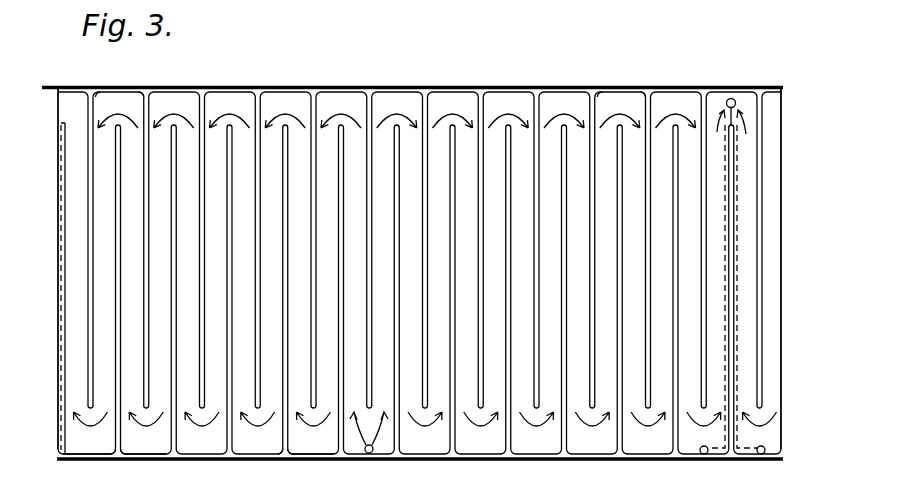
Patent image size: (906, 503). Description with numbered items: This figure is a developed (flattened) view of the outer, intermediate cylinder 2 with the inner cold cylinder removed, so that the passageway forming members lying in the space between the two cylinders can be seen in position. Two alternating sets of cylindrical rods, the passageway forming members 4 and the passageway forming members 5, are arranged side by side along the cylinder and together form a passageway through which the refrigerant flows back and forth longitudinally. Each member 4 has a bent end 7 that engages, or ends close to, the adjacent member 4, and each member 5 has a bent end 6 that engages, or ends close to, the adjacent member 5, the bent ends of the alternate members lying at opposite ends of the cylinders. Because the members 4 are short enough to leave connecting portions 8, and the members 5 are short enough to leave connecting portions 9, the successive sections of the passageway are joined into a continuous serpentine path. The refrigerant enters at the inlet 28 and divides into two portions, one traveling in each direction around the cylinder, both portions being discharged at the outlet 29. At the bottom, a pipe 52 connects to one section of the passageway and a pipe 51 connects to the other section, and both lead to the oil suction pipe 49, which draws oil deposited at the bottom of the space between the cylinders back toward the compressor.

The intermediate cylinder 2 is at (67, 109).
The passageway forming member 4 is at (147, 155).
The passageway forming member 5 is at (120, 193).
The bent end 6 is at (198, 458).
The bent end 7 is at (108, 84).
The connecting portion 8 is at (137, 448).
The connecting portion 9 is at (170, 93).
The inlet 28 is at (367, 453).
The outlet 29 is at (730, 98).
The oil suction pipe 49 is at (737, 311).
The pipe 51 is at (760, 455).
The pipe 52 is at (702, 455).